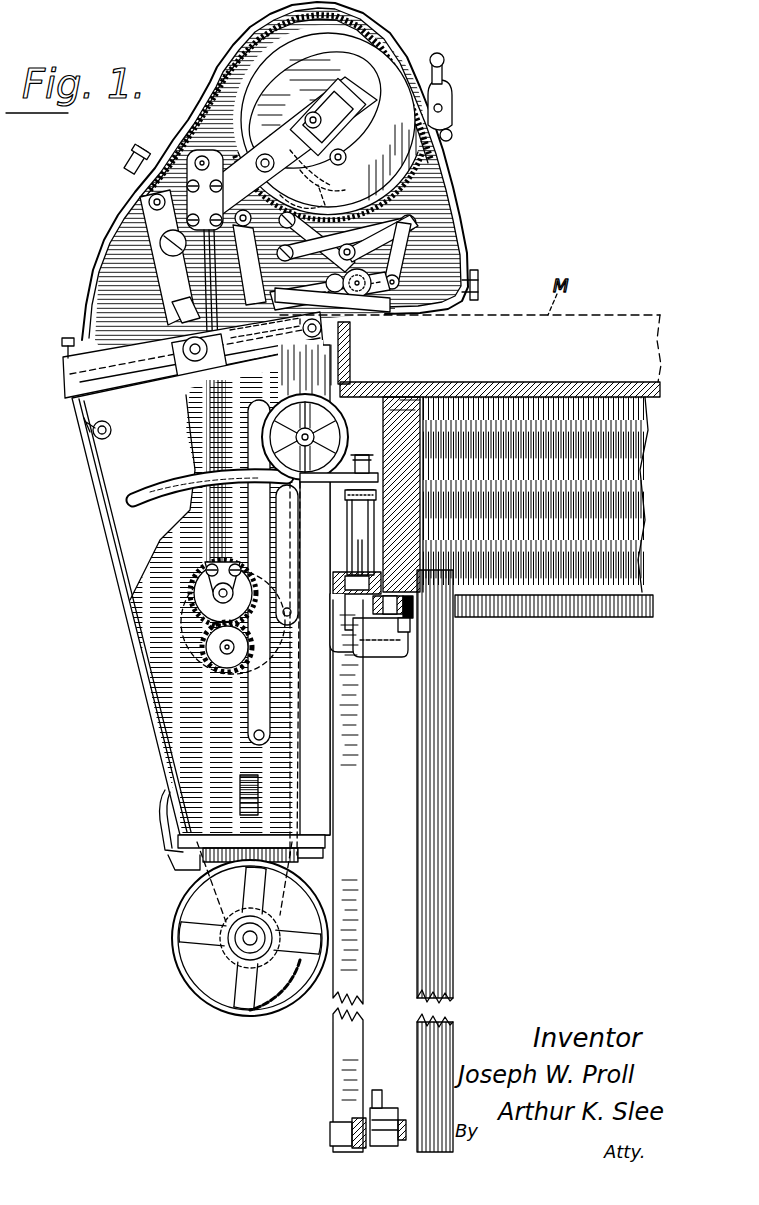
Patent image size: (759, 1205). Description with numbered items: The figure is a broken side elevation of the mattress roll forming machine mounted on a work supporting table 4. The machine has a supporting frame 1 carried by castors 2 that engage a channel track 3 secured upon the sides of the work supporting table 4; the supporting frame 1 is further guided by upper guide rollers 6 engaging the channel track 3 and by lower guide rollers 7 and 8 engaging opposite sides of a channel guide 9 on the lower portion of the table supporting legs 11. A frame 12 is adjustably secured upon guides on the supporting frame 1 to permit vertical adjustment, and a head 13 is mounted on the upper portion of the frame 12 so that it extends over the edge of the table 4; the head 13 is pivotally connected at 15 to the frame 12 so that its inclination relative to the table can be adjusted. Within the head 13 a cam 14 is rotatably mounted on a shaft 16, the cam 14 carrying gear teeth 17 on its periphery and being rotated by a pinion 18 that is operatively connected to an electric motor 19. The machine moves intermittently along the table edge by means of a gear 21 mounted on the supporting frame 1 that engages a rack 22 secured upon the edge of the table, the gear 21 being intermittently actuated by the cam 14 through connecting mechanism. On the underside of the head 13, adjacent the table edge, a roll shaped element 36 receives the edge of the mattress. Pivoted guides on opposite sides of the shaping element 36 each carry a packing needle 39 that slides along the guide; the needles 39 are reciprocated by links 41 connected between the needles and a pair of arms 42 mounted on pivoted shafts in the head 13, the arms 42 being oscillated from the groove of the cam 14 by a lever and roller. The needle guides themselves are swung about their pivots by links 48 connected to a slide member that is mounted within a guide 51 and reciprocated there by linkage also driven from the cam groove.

The supporting frame 1 is at (335, 480).
The castors 2 is at (358, 618).
The channel track 3 is at (350, 607).
The work supporting table 4 is at (510, 382).
The upper guide rollers 6 is at (347, 565).
The lower guide roller 7 is at (380, 1128).
The lower guide roller 8 is at (340, 1134).
The channel guide 9 is at (360, 1123).
The table supporting legs 11 is at (445, 933).
The frame 12 is at (313, 367).
The head 13 is at (197, 121).
The cam 14 is at (352, 70).
The pivotal connection 15 is at (350, 330).
The shaft 16 is at (345, 125).
The gear teeth 17 is at (216, 66).
The pinion 18 is at (213, 150).
The electric motor 19 is at (192, 997).
The gear 21 is at (375, 622).
The rack 22 is at (410, 625).
The roll shaped element 36 is at (405, 265).
The packing needle 39 is at (357, 283).
The links 41 is at (387, 253).
The arms 42 is at (265, 243).
The links 48 is at (430, 230).
The guide 51 is at (395, 208).